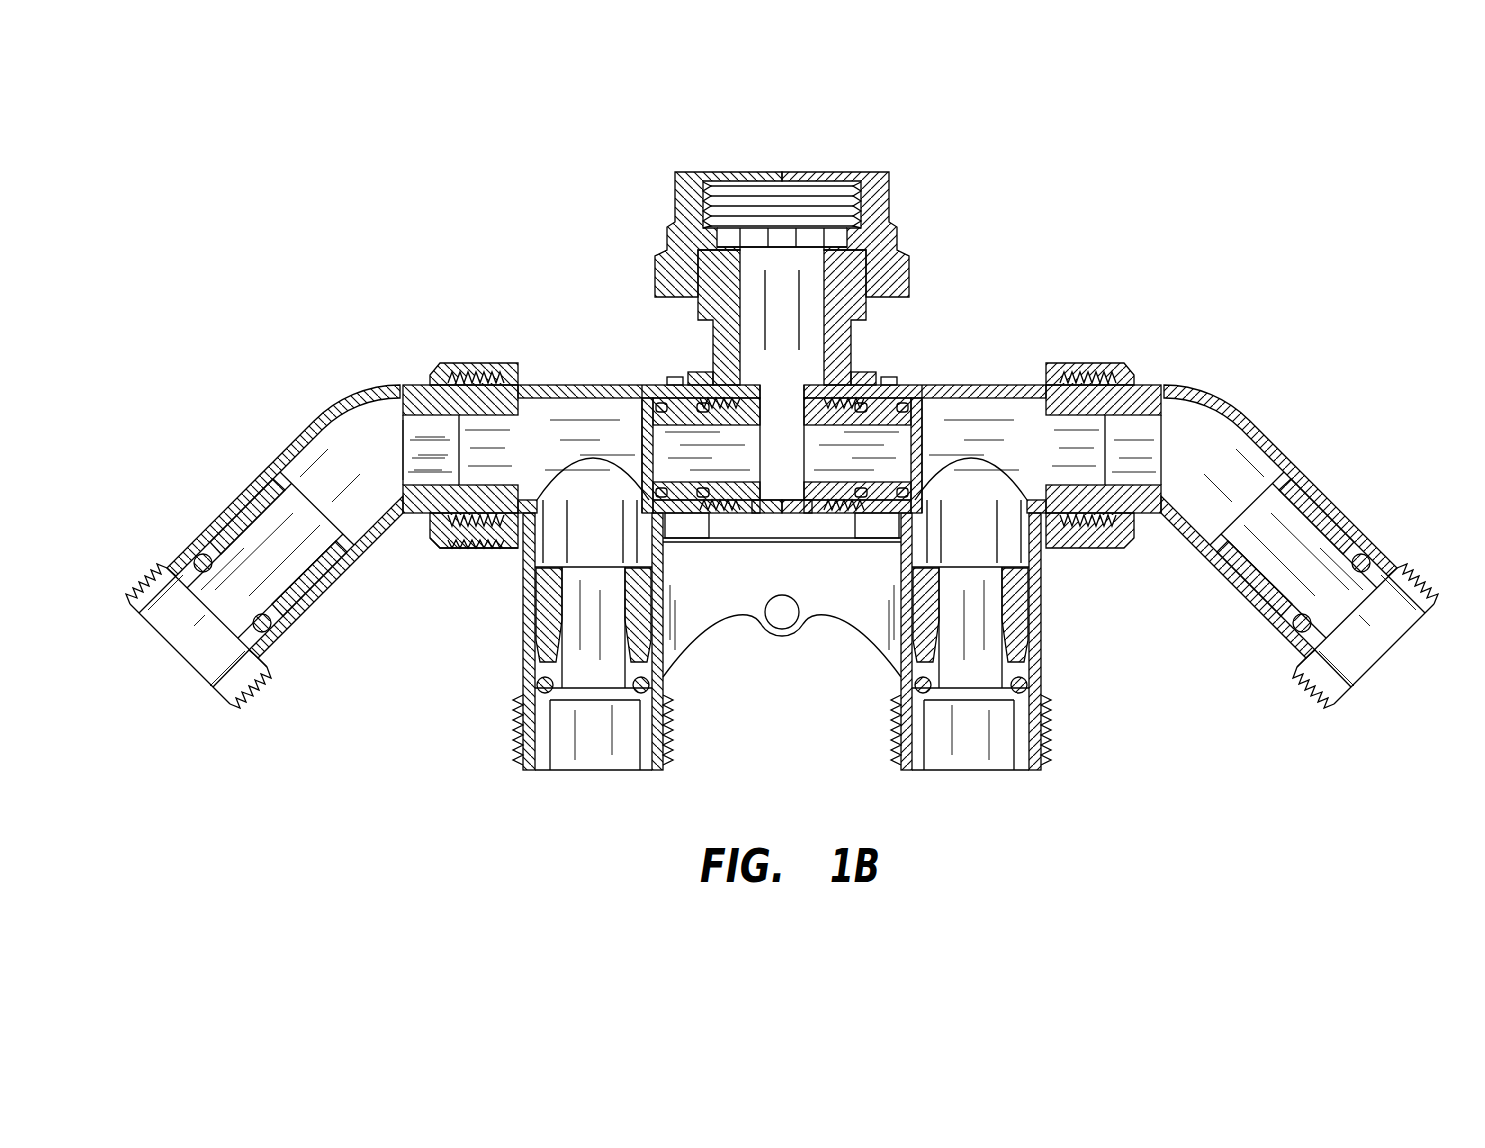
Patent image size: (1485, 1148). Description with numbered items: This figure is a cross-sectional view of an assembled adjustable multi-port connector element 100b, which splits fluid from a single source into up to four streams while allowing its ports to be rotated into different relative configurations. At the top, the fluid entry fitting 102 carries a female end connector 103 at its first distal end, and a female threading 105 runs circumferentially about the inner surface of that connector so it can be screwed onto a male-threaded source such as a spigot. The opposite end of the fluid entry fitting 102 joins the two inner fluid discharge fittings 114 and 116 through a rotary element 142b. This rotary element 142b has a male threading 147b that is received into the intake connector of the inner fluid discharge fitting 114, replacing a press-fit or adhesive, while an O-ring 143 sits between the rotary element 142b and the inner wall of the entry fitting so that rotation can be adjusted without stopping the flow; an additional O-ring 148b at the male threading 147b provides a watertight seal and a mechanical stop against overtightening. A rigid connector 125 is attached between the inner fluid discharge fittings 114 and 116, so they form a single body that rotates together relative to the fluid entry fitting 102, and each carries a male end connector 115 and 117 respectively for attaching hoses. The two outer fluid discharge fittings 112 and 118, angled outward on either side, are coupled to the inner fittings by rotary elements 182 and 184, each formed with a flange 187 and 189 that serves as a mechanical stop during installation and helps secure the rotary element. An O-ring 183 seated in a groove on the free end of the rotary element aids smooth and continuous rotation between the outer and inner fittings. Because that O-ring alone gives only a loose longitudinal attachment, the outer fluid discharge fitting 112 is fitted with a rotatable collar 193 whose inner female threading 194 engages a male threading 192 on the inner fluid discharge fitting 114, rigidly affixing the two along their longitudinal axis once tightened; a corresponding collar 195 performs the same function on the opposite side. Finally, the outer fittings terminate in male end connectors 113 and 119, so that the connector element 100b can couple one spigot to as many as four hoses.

The adjustable multi-port connector element 100b is at (262, 224).
The fluid entry fitting 102 is at (897, 173).
The female end connector 103 is at (887, 172).
The female threading 105 is at (757, 185).
The outer fluid discharge fitting 112 is at (300, 386).
The male end connector 113 is at (205, 682).
The inner fluid discharge fitting 114 is at (523, 360).
The male end connector 115 is at (590, 772).
The inner fluid discharge fitting 116 is at (960, 375).
The male end connector 117 is at (982, 772).
The outer fluid discharge fitting 118 is at (1457, 578).
The male end connector 119 is at (1385, 680).
The rigid connector 125 is at (782, 634).
The rotary element 142b is at (634, 426).
The O-ring 143 is at (662, 395).
The male threading 147b is at (718, 395).
The O-ring 148b is at (702, 397).
The rotary element 182 is at (393, 428).
The O-ring 183 is at (490, 400).
The rotary element 184 is at (1170, 422).
The flange 187 is at (430, 568).
The flange 189 is at (1113, 560).
The male threading 192 is at (498, 550).
The rotatable collar 193 is at (437, 362).
The female threading 194 is at (480, 550).
The collar 195 is at (1084, 360).